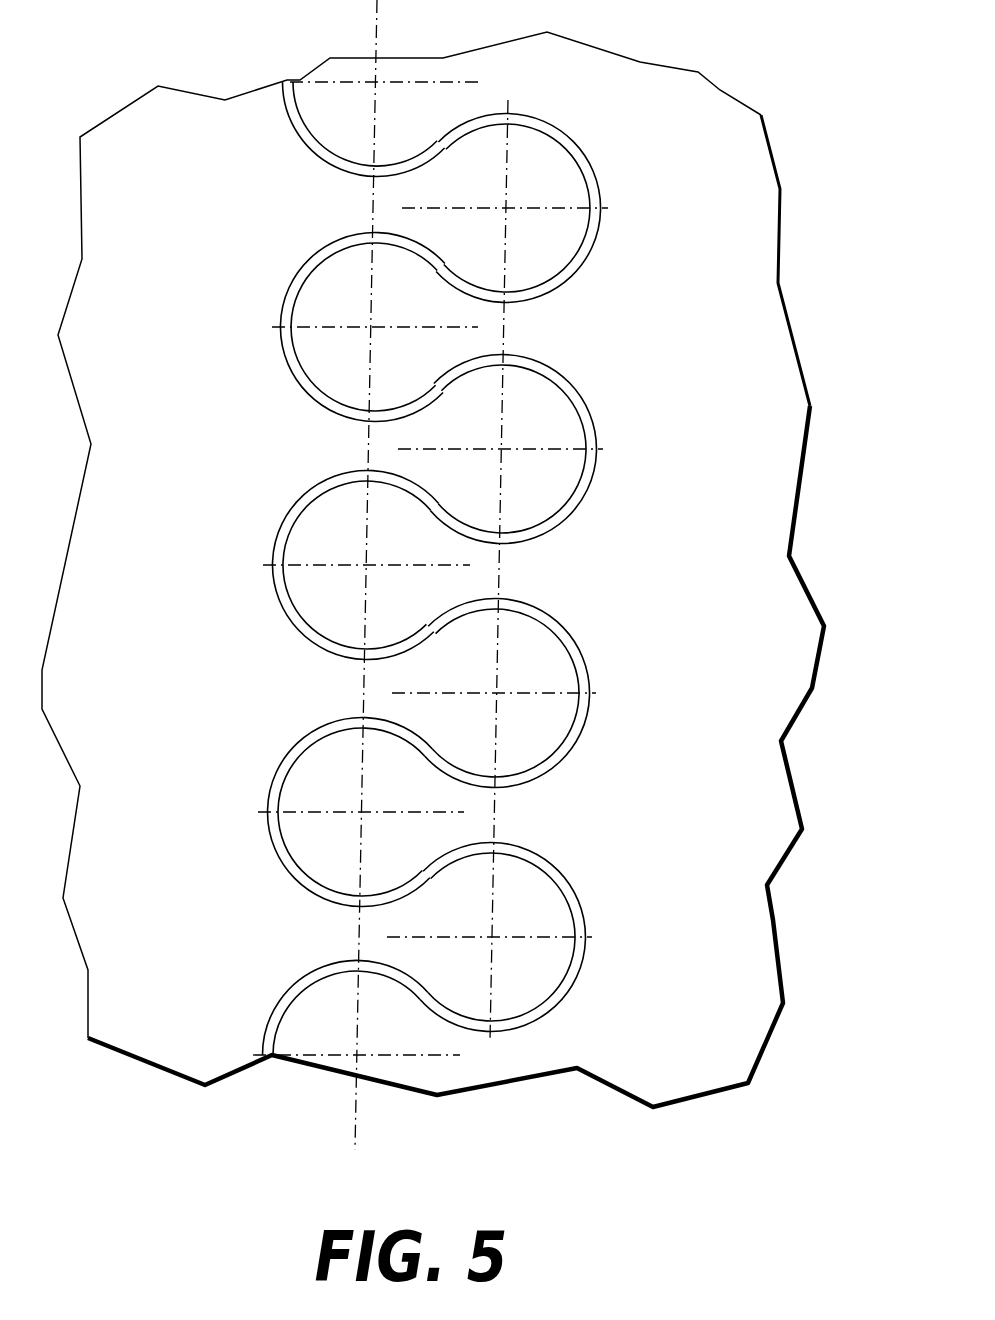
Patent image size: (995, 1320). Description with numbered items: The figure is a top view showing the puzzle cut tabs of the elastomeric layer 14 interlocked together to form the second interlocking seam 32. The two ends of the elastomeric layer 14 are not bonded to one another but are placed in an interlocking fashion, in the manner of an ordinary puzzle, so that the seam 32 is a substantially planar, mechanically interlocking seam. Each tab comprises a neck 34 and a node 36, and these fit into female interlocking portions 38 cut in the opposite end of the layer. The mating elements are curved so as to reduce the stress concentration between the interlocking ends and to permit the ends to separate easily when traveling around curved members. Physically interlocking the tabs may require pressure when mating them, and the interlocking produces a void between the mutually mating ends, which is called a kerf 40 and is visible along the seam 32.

The elastomeric layer 14 is at (777, 364).
The second interlocking seam 32 is at (448, 568).
The neck 34 is at (500, 327).
The node 36 is at (312, 627).
The female interlocking portion 38 is at (292, 515).
The kerf 40 is at (553, 627).